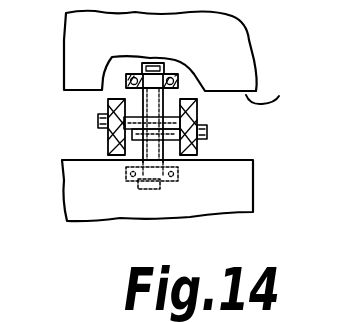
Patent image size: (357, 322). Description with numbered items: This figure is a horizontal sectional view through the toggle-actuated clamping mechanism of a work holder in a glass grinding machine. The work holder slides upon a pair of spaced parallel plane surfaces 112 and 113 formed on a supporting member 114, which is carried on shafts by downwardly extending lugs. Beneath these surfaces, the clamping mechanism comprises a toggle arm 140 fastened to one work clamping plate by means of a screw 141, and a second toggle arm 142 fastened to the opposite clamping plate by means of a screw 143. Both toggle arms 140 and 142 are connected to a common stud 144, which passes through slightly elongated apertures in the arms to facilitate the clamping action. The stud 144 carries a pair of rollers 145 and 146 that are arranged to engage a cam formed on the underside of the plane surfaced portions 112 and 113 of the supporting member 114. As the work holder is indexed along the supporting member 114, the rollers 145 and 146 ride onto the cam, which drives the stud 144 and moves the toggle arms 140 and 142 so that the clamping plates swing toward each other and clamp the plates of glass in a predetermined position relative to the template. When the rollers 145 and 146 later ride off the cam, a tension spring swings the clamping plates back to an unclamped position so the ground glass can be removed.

The plane surface 112 is at (241, 62).
The plane surface 113 is at (231, 200).
The supporting member 114 is at (282, 92).
The toggle arm 140 is at (110, 133).
The screw 141 is at (98, 123).
The toggle arm 142 is at (198, 150).
The screw 143 is at (203, 132).
The stud 144 is at (150, 107).
The roller 145 is at (127, 78).
The roller 146 is at (178, 175).